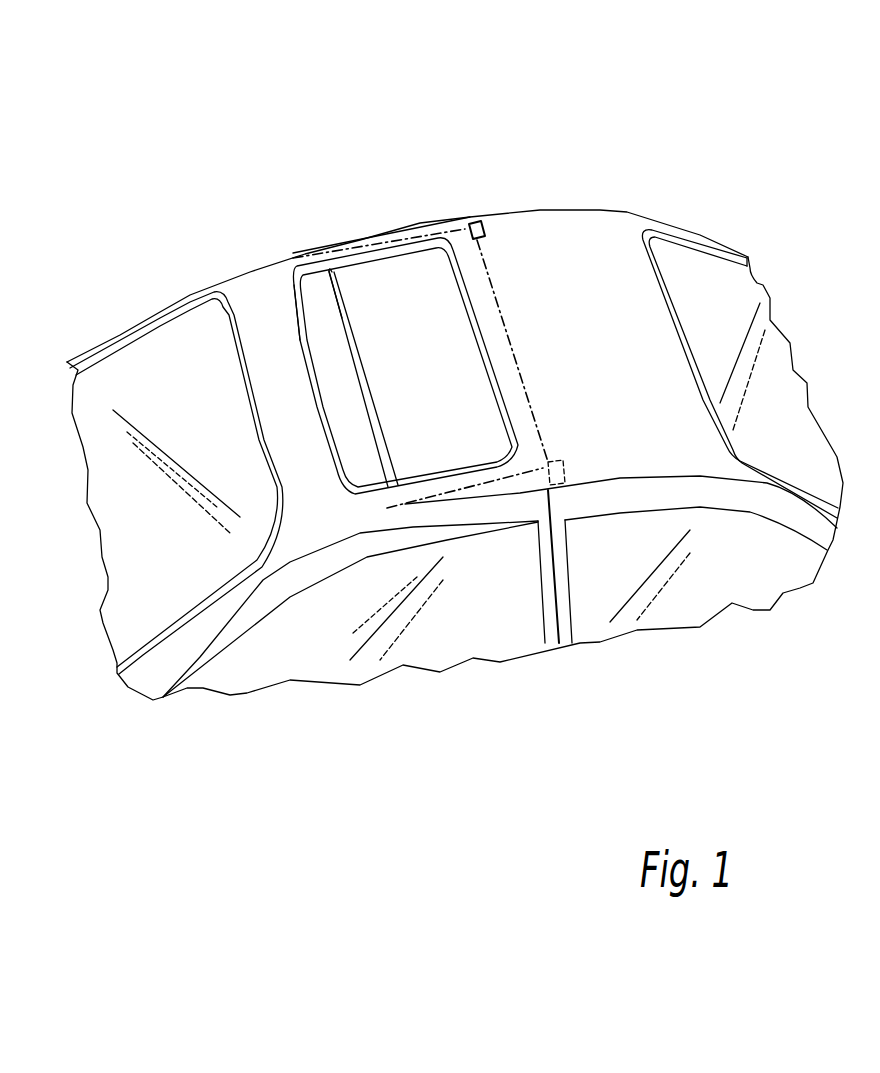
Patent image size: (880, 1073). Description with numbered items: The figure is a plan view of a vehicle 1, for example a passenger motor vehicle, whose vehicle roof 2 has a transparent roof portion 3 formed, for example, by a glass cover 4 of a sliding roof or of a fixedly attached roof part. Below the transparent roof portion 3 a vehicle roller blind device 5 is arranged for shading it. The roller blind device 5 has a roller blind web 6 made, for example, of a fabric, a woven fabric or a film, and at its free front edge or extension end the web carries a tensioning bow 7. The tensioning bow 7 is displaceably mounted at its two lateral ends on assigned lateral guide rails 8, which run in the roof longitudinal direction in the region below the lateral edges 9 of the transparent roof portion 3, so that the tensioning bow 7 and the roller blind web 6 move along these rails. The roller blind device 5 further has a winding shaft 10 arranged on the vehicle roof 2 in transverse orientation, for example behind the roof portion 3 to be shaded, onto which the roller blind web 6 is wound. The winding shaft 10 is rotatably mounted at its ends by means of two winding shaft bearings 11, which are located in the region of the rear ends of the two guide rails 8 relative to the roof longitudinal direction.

The vehicle 1 is at (147, 280).
The vehicle roof 2 is at (548, 215).
The transparent roof portion 3 is at (287, 275).
The glass cover 4 is at (348, 298).
The vehicle roller blind device 5 is at (420, 463).
The roller blind web 6 is at (441, 287).
The tensioning bow 7 is at (323, 292).
The lateral guide rails 8 is at (380, 238).
The lateral edges 9 is at (360, 245).
The winding shaft 10 is at (490, 275).
The winding shaft bearings 11 is at (470, 222).